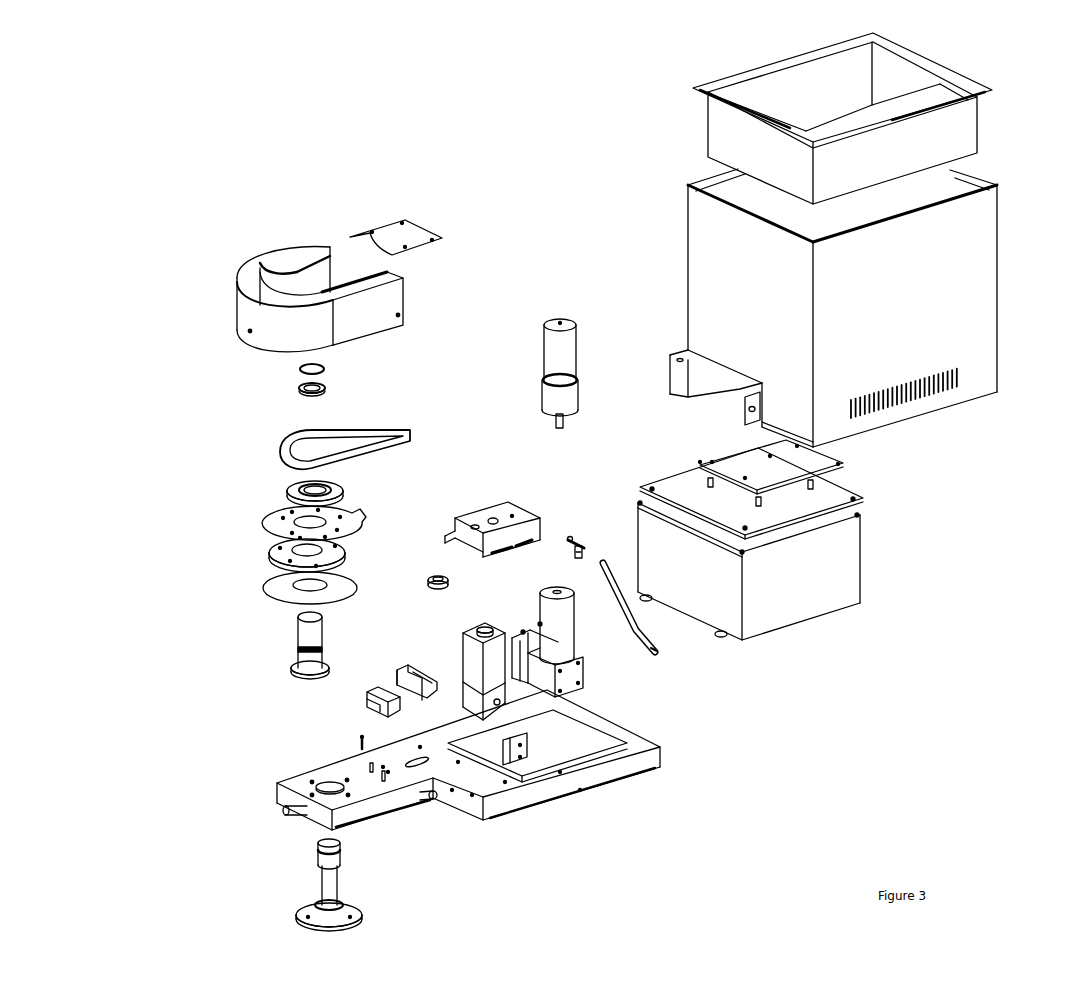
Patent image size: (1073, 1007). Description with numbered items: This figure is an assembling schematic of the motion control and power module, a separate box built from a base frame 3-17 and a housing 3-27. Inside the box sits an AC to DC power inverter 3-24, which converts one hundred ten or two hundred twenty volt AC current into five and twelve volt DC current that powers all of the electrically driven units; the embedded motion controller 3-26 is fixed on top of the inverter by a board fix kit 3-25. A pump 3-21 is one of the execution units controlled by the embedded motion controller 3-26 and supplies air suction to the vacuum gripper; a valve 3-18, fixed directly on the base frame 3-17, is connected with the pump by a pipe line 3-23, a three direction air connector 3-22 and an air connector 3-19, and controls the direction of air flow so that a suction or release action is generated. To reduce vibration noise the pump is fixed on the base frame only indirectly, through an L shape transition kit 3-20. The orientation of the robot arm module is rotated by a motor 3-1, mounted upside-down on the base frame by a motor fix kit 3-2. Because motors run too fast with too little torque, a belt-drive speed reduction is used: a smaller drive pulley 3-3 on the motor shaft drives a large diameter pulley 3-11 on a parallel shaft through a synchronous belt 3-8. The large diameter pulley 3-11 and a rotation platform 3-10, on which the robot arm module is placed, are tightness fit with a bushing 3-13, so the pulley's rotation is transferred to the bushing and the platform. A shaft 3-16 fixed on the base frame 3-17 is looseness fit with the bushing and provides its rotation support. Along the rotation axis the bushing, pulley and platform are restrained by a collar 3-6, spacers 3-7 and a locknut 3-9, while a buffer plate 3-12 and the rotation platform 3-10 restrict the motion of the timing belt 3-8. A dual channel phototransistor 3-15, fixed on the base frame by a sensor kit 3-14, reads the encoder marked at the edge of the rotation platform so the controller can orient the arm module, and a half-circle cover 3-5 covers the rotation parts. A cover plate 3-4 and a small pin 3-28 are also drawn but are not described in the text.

The motor 3-1 is at (563, 350).
The motor fix kit 3-2 is at (512, 517).
The drive pulley 3-3 is at (438, 574).
The cover plate 3-4 is at (402, 235).
The half-circle cover 3-5 is at (305, 255).
The collar 3-6 is at (300, 367).
The spacers 3-7 is at (298, 388).
The synchronous belt 3-8 is at (280, 445).
The locknut 3-9 is at (287, 490).
The rotation platform 3-10 is at (273, 527).
The large diameter pulley 3-11 is at (272, 558).
The buffer plate 3-12 is at (283, 592).
The bushing 3-13 is at (305, 640).
The sensor kit 3-14 is at (380, 684).
The dual channel phototransistor 3-15 is at (367, 702).
The shaft 3-16 is at (330, 888).
The base frame 3-17 is at (368, 810).
The valve 3-18 is at (470, 697).
The air connector 3-19 is at (498, 702).
The L shape transition kit 3-20 is at (517, 757).
The pump 3-21 is at (553, 652).
The three direction air connector 3-22 is at (578, 560).
The pipe line 3-23 is at (653, 652).
The AC to DC power inverter 3-24 is at (770, 607).
The board fix kit 3-25 is at (797, 479).
The embedded motion controller 3-26 is at (817, 480).
The housing 3-27 is at (869, 347).
The pin 3-28 is at (362, 743).